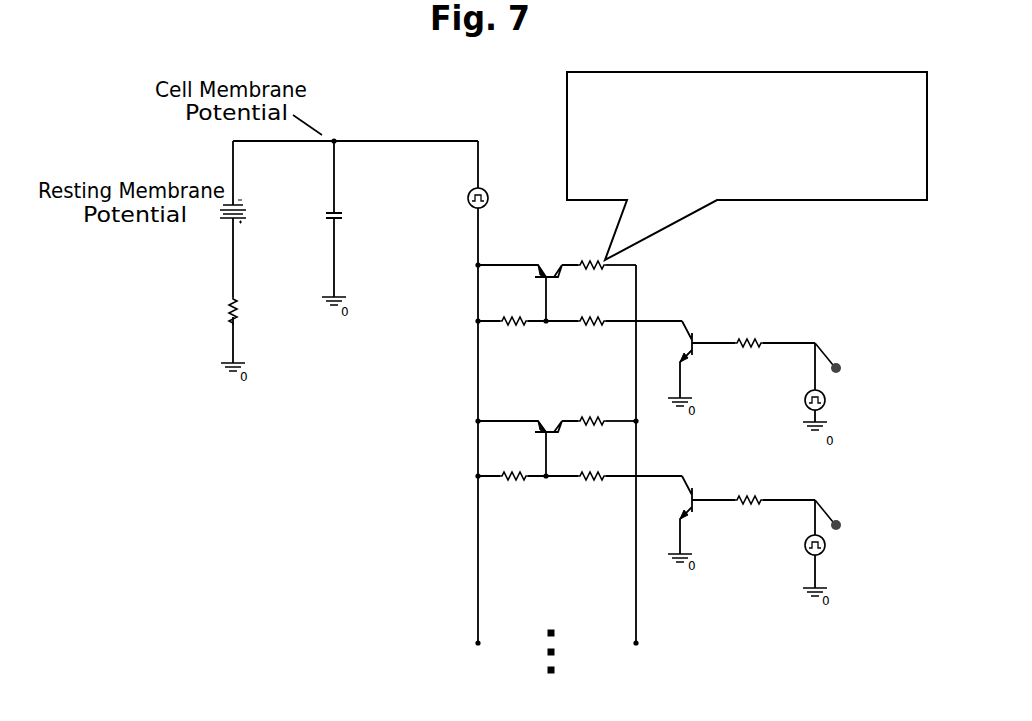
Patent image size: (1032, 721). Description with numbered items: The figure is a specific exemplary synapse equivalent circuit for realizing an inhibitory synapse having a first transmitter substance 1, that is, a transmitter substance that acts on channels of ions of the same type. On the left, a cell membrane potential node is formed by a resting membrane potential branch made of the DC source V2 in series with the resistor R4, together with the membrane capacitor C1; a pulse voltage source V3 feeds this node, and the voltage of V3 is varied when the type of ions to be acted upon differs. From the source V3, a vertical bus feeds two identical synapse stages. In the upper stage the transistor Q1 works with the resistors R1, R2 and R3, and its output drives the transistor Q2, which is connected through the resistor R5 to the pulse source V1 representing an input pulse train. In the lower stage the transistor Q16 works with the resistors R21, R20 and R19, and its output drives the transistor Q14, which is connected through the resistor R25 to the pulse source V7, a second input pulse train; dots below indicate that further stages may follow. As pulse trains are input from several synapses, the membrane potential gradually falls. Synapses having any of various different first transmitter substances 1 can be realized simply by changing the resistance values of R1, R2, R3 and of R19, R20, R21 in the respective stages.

The first transmitter substance 1 is at (747, 166).
The resting membrane potential DC source V2 is at (244, 221).
The cell membrane capacitor C1 is at (350, 224).
The resistor R4 is at (251, 311).
The voltage source V3 is at (455, 211).
The PNP transistor Q1 is at (528, 284).
The resistor R1 is at (607, 264).
The resistor R2 is at (528, 335).
The resistor R3 is at (630, 335).
The NPN transistor Q2 is at (701, 360).
The resistor R5 is at (775, 345).
The pulse voltage source V1 is at (857, 399).
The PNP transistor Q16 is at (528, 439).
The resistor R21 is at (608, 418).
The resistor R20 is at (528, 473).
The resistor R19 is at (630, 477).
The NPN transistor Q14 is at (701, 514).
The resistor R25 is at (775, 501).
The pulse voltage source V7 is at (857, 550).